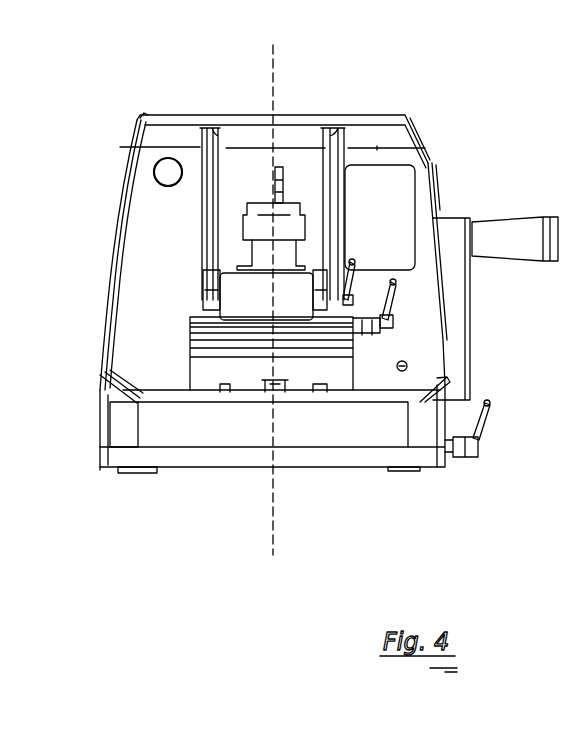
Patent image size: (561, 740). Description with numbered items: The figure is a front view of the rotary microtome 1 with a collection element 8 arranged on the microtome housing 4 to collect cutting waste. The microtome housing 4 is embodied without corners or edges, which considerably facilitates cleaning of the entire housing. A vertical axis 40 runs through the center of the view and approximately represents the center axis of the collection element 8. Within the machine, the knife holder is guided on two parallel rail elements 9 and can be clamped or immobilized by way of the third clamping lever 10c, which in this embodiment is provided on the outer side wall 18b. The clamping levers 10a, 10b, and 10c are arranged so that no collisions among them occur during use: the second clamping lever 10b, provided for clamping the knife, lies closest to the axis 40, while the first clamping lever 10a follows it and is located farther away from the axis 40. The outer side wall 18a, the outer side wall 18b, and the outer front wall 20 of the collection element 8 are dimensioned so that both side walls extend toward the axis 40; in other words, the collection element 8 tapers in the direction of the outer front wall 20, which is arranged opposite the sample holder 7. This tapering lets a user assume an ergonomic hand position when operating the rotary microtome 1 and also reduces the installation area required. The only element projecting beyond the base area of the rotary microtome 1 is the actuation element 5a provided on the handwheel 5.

The rotary microtome 1 is at (235, 88).
The axis 40 is at (273, 80).
The microtome housing 4 is at (140, 232).
The sample holder 7 is at (266, 215).
The rail elements 9 is at (225, 392).
The collection element 8 is at (113, 378).
The outer side wall 18a is at (110, 420).
The outer side wall 18b is at (440, 418).
The outer front wall 20 is at (212, 440).
The handwheel 5 is at (460, 275).
The actuation element 5a is at (513, 218).
The first clamping lever 10a is at (395, 285).
The second clamping lever 10b is at (356, 262).
The third clamping lever 10c is at (493, 406).